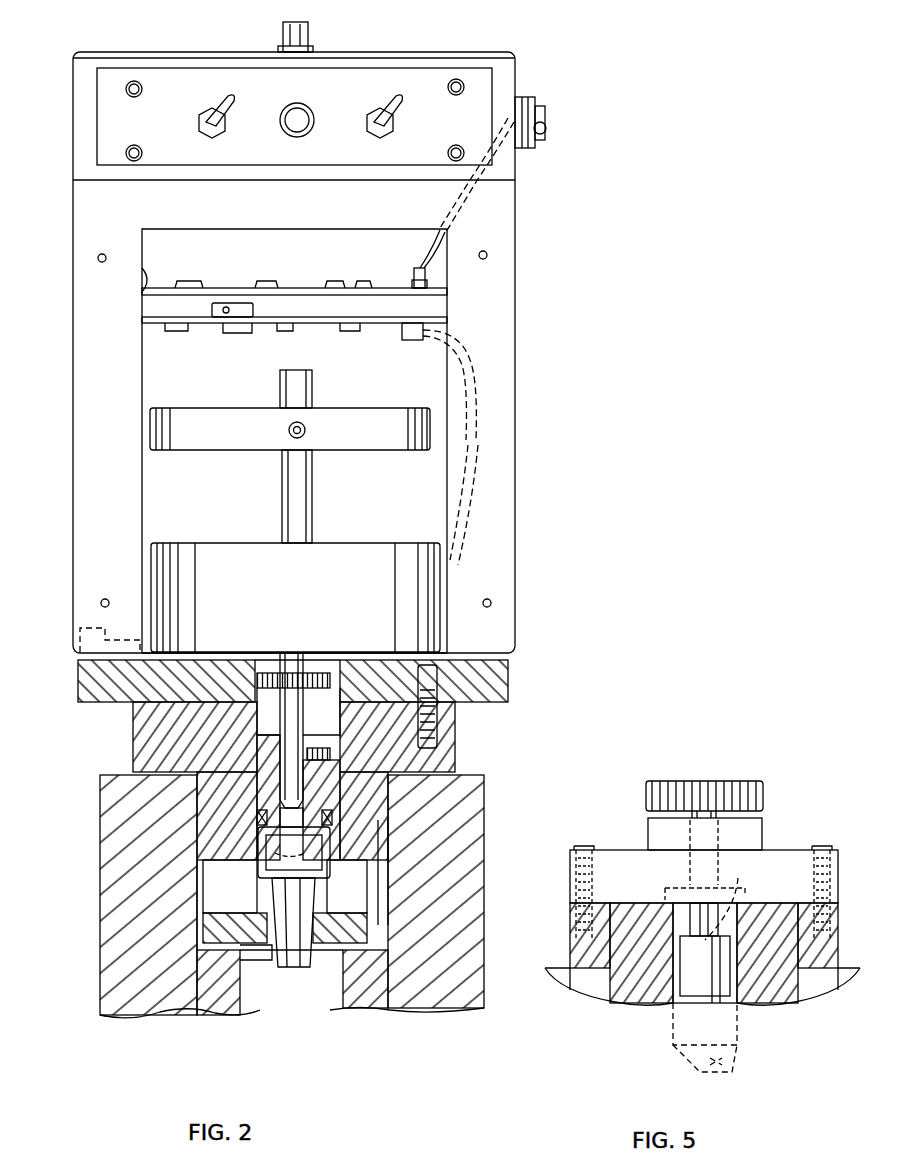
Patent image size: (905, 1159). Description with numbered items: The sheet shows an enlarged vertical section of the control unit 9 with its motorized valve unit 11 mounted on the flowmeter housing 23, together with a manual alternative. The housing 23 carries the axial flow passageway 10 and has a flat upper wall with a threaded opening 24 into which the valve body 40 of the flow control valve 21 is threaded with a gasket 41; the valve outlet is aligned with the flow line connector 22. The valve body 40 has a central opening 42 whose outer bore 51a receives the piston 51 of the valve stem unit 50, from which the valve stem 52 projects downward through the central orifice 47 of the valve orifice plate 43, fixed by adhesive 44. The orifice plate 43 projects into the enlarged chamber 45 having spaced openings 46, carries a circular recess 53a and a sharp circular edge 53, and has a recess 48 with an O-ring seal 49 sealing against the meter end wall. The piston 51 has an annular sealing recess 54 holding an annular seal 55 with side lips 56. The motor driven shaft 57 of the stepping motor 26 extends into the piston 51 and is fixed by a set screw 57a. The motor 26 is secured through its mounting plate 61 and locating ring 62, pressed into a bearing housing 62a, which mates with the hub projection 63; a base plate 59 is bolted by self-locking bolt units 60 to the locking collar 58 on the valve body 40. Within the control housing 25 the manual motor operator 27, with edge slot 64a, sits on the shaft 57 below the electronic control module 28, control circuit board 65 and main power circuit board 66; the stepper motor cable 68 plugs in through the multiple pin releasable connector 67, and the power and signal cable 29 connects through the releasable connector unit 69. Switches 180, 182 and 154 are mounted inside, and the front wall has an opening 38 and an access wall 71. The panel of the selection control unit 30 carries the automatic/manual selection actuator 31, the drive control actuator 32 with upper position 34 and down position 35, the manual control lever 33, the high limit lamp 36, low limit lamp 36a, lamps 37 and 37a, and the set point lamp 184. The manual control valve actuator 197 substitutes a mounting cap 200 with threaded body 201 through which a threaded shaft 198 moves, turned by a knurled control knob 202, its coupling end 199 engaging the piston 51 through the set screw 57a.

In FIG. 2, the access wall 71 is at (128, 52).
In FIG. 2, the set point lamp 184 is at (300, 112).
In FIG. 2, the upper position 34 is at (372, 70).
In FIG. 2, the high limit lamp 36 is at (460, 80).
In FIG. 2, the power and signal cable 29 is at (540, 108).
In FIG. 5, the power and signal cable 29 is at (640, 1012).
In FIG. 2, the lamp 37 is at (134, 97).
In FIG. 2, the automatic/manual selection actuator 31 is at (210, 106).
In FIG. 2, the manual control lever 33 is at (348, 110).
In FIG. 2, the drive control actuator 32 is at (398, 107).
In FIG. 2, the selection control unit 30 is at (273, 150).
In FIG. 2, the down position 35 is at (375, 163).
In FIG. 2, the low limit lamp 36a is at (455, 162).
In FIG. 2, the lamp 37a is at (134, 162).
In FIG. 2, the switch 180 is at (225, 303).
In FIG. 2, the control circuit board 65 is at (312, 287).
In FIG. 2, the releasable connector unit 69 is at (425, 275).
In FIG. 2, the opening 38 is at (142, 284).
In FIG. 2, the second switch 182 is at (255, 311).
In FIG. 2, the limit top switch 154 is at (176, 333).
In FIG. 2, the electronic control module 28 is at (242, 334).
In FIG. 2, the main power circuit board 66 is at (300, 331).
In FIG. 2, the multiple pin releasable connector 67 is at (405, 340).
In FIG. 2, the stepper motor cable 68 is at (462, 378).
In FIG. 2, the edge slot 64a is at (297, 420).
In FIG. 2, the manual motor operator 27 is at (380, 425).
In FIG. 2, the bearing housing 62a is at (292, 436).
In FIG. 2, the motor driven shaft 57 is at (312, 490).
In FIG. 2, the motorized valve unit 11 is at (462, 556).
In FIG. 2, the control housing 25 is at (113, 489).
In FIG. 2, the stepping motor 26 is at (235, 565).
In FIG. 2, the control unit 9 is at (88, 566).
In FIG. 2, the locating ring 62 is at (238, 660).
In FIG. 2, the mounting plate 61 is at (207, 657).
In FIG. 2, the hub projection 63 is at (256, 665).
In FIG. 5, the hub projection 63 is at (665, 888).
In FIG. 2, the valve stem unit 50 is at (322, 724).
In FIG. 2, the base plate 59 is at (80, 678).
In FIG. 2, the self-locking bolt units 60 is at (440, 690).
In FIG. 2, the locking collar 58 is at (133, 731).
In FIG. 2, the set screw 57a is at (445, 760).
In FIG. 5, the set screw 57a is at (748, 912).
In FIG. 2, the gasket 41 is at (470, 771).
In FIG. 5, the gasket 41 is at (815, 995).
In FIG. 2, the piston 51 is at (252, 770).
In FIG. 5, the piston 51 is at (658, 1005).
In FIG. 2, the valve body 40 is at (450, 781).
In FIG. 5, the valve body 40 is at (765, 1005).
In FIG. 2, the threaded opening 24 is at (185, 806).
In FIG. 2, the annular sealing recess 54 is at (445, 796).
In FIG. 2, the annular seal 55 is at (262, 818).
In FIG. 2, the outer bore 51a is at (450, 814).
In FIG. 5, the outer bore 51a is at (689, 934).
In FIG. 2, the side lips 56 is at (262, 832).
In FIG. 2, the central opening 42 is at (440, 850).
In FIG. 2, the openings 46 is at (245, 867).
In FIG. 2, the valve stem 52 is at (288, 875).
In FIG. 5, the valve stem 52 is at (722, 1068).
In FIG. 2, the flow control valve 21 is at (250, 890).
In FIG. 2, the flow line connector 22 is at (345, 882).
In FIG. 2, the circular recess 53a is at (348, 905).
In FIG. 2, the circular edge 53 is at (268, 912).
In FIG. 2, the enlarged chamber 45 is at (440, 920).
In FIG. 2, the valve orifice plate 43 is at (210, 940).
In FIG. 2, the central orifice 47 is at (256, 962).
In FIG. 2, the flow passageway 10 is at (305, 996).
In FIG. 2, the housing 23 is at (475, 990).
In FIG. 5, the housing 23 is at (585, 1000).
In FIG. 2, the adhesive 44 is at (215, 1012).
In FIG. 2, the recess 48 is at (320, 968).
In FIG. 2, the O-ring seal 49 is at (345, 975).
In FIG. 5, the knurled control knob 202 is at (764, 793).
In FIG. 5, the manual control valve actuator 197 is at (628, 822).
In FIG. 5, the threaded body 201 is at (763, 830).
In FIG. 5, the mounting cap 200 is at (783, 856).
In FIG. 5, the threaded shaft 198 is at (690, 866).
In FIG. 5, the coupling end 199 is at (738, 895).